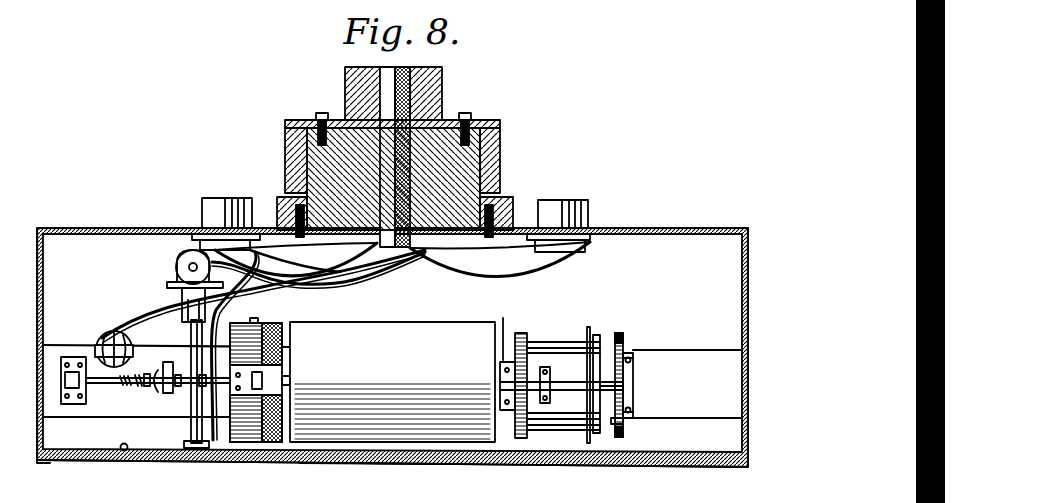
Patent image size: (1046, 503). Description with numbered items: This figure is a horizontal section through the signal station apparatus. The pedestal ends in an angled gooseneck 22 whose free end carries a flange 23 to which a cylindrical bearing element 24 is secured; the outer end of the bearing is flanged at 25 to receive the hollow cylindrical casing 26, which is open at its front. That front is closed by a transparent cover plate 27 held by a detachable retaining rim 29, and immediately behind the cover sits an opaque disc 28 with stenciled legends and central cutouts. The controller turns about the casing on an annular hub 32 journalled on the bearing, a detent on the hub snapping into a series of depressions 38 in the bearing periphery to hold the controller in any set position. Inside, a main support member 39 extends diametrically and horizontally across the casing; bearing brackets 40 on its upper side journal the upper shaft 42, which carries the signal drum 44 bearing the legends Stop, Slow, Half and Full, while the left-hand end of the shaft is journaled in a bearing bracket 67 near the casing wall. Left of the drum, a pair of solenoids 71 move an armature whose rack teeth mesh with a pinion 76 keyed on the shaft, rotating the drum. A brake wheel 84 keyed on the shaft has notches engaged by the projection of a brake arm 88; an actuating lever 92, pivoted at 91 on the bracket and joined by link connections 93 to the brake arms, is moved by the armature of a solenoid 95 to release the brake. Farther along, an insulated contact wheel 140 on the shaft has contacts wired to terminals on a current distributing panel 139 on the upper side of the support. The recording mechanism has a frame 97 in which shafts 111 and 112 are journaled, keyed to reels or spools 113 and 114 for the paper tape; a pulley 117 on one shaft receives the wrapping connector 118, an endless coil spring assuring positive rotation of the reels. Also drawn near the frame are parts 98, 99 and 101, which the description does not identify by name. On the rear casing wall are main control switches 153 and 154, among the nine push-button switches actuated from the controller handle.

The angled portion or gooseneck 22 is at (442, 84).
The flange 23 is at (293, 120).
The cylindrical bearing element 24 is at (480, 158).
The flange 25 is at (278, 200).
The hollow cylindrical casing 26 is at (685, 228).
The transparent cover plate 27 is at (360, 467).
The opaque disc 28 is at (124, 451).
The detachable retaining rim 29 is at (46, 466).
The annular hub 32 is at (500, 182).
The depressions 38 is at (285, 160).
The main support member 39 is at (100, 417).
The bearing brackets 40 is at (503, 318).
The upper shaft 42 is at (110, 384).
The signal drum 44 is at (392, 330).
The bearing bracket 67 is at (80, 357).
The solenoids 71 is at (276, 323).
The pinion 76 is at (290, 380).
The brake wheel 84 is at (191, 357).
The brake arm 88 is at (191, 433).
The pivot 91 is at (182, 302).
The actuating lever 92 is at (178, 286).
The link connections 93 is at (185, 320).
The solenoid 95 is at (177, 259).
The frame 97 is at (633, 388).
The connecting plate 98 is at (550, 373).
The rack 99 is at (521, 335).
The shaft 101 is at (550, 388).
The shaft 111 is at (625, 422).
The shaft 112 is at (633, 356).
The reel or spool 113 is at (566, 430).
The reel or spool 114 is at (561, 340).
The pulley 117 is at (623, 337).
The wrapping connector 118 is at (633, 374).
The current distributing panel 139 is at (113, 334).
The insulated contact wheel 140 is at (168, 393).
The main control switch 153 is at (250, 244).
The main control switch 154 is at (540, 243).